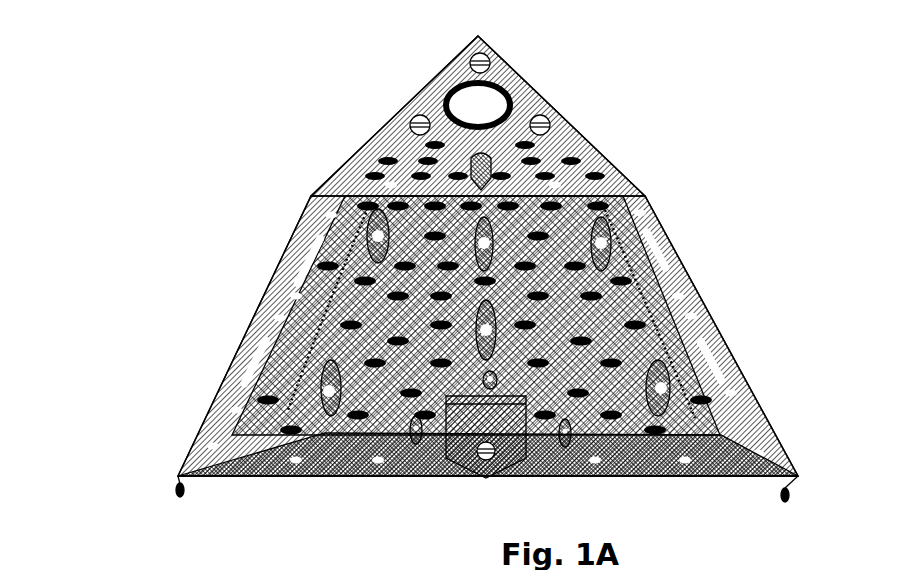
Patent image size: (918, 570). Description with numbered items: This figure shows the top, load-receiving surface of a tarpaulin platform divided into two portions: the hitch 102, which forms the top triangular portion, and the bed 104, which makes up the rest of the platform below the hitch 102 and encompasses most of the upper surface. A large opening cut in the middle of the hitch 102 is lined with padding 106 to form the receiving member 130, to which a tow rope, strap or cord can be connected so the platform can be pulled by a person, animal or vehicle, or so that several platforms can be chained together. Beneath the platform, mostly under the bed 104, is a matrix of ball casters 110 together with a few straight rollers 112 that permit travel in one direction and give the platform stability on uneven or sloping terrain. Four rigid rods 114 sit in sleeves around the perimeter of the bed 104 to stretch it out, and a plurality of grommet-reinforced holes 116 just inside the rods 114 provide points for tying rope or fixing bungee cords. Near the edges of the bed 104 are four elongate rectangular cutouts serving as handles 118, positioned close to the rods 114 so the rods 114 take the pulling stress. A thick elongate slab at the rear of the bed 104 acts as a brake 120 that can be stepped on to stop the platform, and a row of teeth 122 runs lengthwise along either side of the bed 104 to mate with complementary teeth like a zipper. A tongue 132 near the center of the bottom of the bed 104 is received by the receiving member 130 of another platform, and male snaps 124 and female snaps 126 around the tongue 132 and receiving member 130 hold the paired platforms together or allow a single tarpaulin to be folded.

The hitch 102 is at (562, 133).
The bed 104 is at (403, 217).
The padding 106 is at (507, 90).
The ball casters 110 is at (637, 253).
The straight rollers 112 is at (653, 380).
The rigid rods 114 is at (287, 245).
The holes 116 is at (205, 435).
The handles 118 is at (247, 353).
The brake 120 is at (515, 460).
The row of teeth 122 is at (313, 317).
The male snaps 124 is at (583, 460).
The female snaps 126 is at (398, 105).
The receiving member 130 is at (468, 97).
The tongue 132 is at (478, 413).